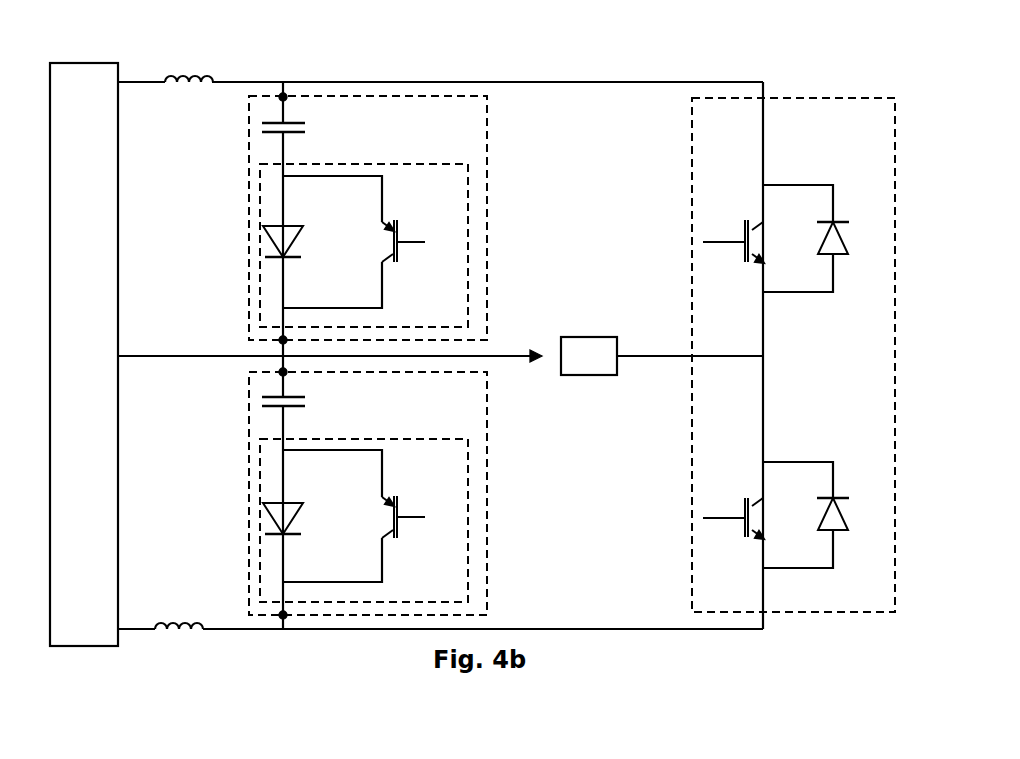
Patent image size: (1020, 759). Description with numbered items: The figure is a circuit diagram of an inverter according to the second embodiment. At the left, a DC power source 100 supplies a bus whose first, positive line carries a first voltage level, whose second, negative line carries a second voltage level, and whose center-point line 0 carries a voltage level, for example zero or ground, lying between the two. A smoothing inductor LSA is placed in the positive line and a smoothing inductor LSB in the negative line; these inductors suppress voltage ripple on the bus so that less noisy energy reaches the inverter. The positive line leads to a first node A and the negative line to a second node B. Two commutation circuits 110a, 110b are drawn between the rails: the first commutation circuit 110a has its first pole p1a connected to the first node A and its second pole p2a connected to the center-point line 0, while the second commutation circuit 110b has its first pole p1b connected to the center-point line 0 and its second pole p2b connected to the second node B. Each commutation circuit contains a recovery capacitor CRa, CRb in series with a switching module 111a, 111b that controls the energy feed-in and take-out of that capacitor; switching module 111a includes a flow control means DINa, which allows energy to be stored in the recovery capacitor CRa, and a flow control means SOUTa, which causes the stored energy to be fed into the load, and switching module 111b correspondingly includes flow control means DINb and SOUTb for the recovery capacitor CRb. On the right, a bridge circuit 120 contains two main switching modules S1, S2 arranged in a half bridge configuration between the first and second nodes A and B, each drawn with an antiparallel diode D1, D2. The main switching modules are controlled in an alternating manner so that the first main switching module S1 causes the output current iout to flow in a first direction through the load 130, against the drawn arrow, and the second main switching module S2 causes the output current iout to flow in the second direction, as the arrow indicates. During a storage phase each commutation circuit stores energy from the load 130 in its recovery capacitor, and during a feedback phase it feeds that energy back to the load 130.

The DC power source 100 is at (97, 328).
The bridge circuit 120 is at (795, 321).
The load 130 is at (607, 333).
The commutation circuit 110a is at (426, 218).
The commutation circuit 110b is at (425, 493).
The switching module 111a is at (364, 225).
The switching module 111b is at (364, 500).
The first node A is at (487, 57).
The second node B is at (483, 606).
The center-point line 0 is at (200, 331).
The first pole p1a is at (318, 70).
The second pole p2a is at (218, 297).
The first pole p1b is at (215, 398).
The second pole p2b is at (218, 575).
The first main switching module S1 is at (768, 238).
The second main switching module S2 is at (768, 515).
The upper freewheeling diode D1 is at (853, 239).
The lower freewheeling diode D2 is at (853, 515).
The smoothing inductor LSA is at (189, 62).
The smoothing inductor LSB is at (179, 611).
The second recovery capacitor CRa is at (308, 131).
The first recovery capacitor CRb is at (308, 406).
The third flow control means DINa is at (306, 244).
The first flow control means DINb is at (306, 521).
The fourth flow control means SOUTa is at (418, 228).
The second flow control means SOUTb is at (419, 504).
The output current iout is at (531, 337).